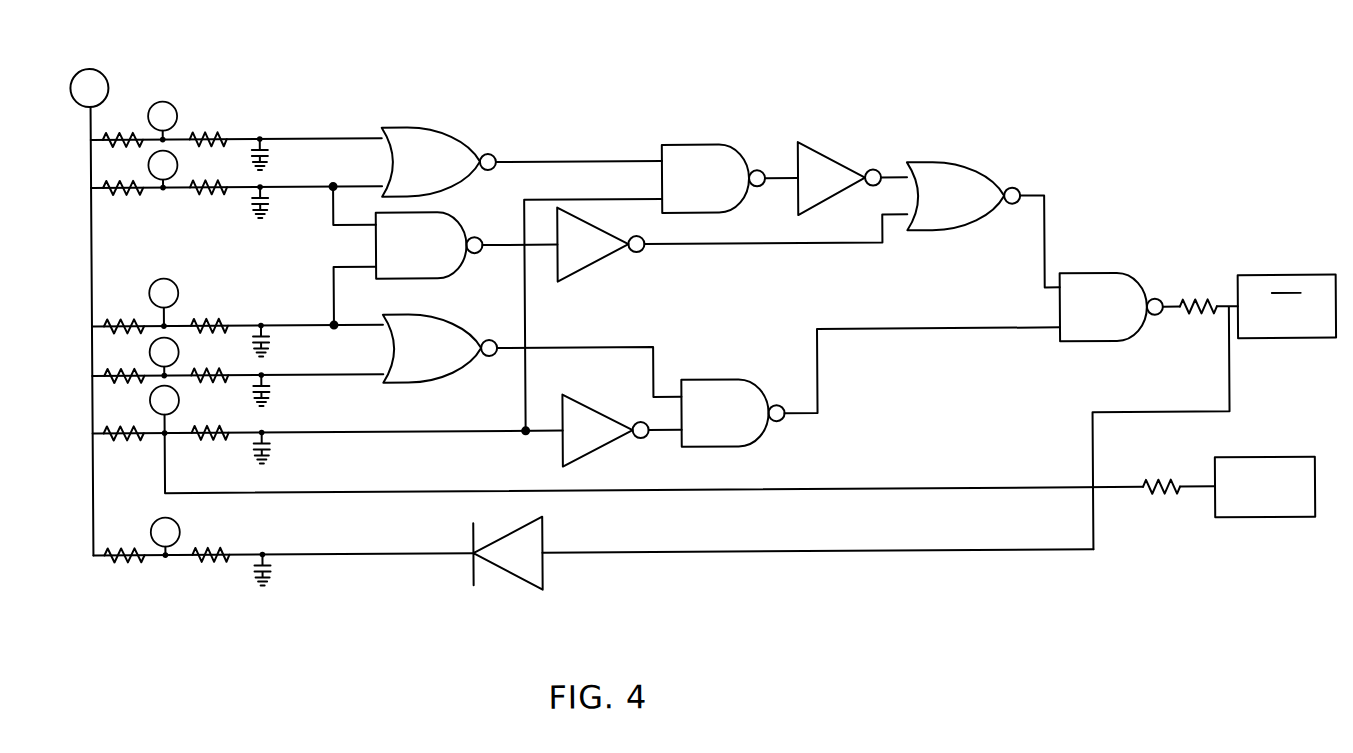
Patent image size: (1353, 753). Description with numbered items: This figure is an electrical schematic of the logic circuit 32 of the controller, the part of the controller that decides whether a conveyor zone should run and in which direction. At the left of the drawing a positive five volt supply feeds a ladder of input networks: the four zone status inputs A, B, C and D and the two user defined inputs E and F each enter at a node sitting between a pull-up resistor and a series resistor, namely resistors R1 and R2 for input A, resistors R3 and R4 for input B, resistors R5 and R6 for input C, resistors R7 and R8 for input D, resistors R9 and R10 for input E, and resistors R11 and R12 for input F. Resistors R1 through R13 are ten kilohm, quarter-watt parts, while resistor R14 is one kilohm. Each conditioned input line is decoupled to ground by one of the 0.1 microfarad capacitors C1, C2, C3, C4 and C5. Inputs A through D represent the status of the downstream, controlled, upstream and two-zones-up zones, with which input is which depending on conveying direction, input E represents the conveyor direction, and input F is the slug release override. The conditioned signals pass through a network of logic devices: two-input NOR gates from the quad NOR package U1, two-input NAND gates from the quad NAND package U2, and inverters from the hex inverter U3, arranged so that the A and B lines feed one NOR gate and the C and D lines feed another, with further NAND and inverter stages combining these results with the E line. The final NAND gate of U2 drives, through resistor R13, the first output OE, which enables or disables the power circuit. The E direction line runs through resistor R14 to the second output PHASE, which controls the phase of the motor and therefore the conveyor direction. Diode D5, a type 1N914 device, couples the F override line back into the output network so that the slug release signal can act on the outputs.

The logic circuit 32 is at (628, 110).
The resistor R1 is at (123, 158).
The resistor R2 is at (209, 158).
The resistor R3 is at (123, 206).
The resistor R4 is at (209, 206).
The resistor R5 is at (124, 345).
The resistor R6 is at (209, 345).
The resistor R7 is at (124, 394).
The resistor R8 is at (209, 394).
The resistor R9 is at (126, 451).
The resistor R10 is at (215, 451).
The resistor R11 is at (130, 572).
The resistor R12 is at (215, 572).
The resistor R13 is at (1196, 324).
The resistor R14 is at (1161, 505).
The capacitor C1 is at (281, 161).
The capacitor C2 is at (281, 211).
The capacitor C3 is at (282, 345).
The capacitor C4 is at (282, 425).
The capacitor C5 is at (284, 573).
The quad 2 input NOR gate U1 is at (702, 253).
The quad 2 input NAND gate U2 is at (769, 295).
The hex invertor U3 is at (720, 304).
The diode D5 is at (507, 553).